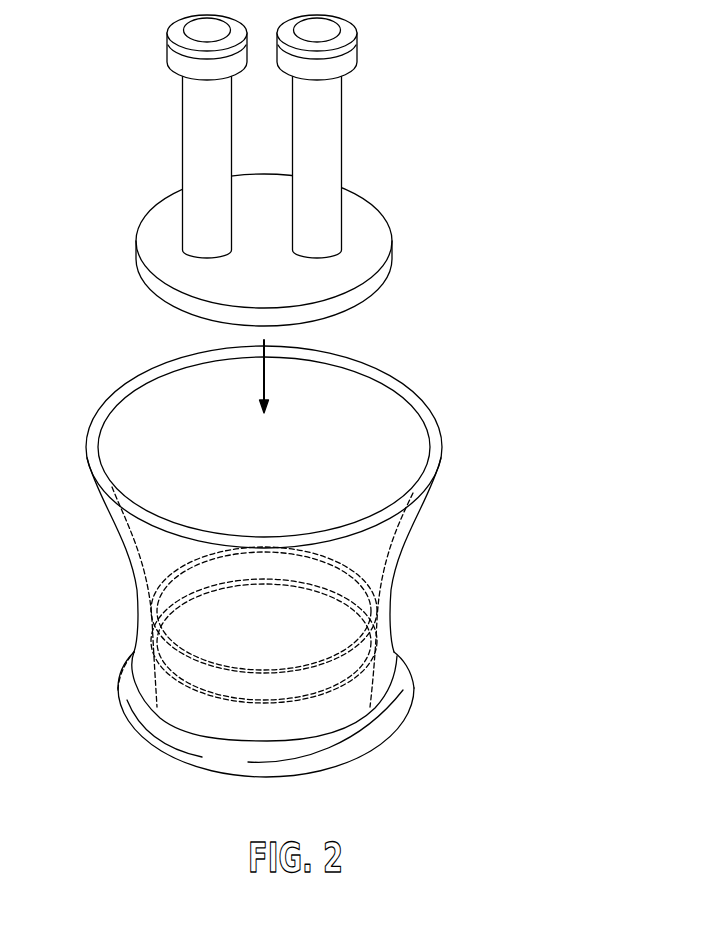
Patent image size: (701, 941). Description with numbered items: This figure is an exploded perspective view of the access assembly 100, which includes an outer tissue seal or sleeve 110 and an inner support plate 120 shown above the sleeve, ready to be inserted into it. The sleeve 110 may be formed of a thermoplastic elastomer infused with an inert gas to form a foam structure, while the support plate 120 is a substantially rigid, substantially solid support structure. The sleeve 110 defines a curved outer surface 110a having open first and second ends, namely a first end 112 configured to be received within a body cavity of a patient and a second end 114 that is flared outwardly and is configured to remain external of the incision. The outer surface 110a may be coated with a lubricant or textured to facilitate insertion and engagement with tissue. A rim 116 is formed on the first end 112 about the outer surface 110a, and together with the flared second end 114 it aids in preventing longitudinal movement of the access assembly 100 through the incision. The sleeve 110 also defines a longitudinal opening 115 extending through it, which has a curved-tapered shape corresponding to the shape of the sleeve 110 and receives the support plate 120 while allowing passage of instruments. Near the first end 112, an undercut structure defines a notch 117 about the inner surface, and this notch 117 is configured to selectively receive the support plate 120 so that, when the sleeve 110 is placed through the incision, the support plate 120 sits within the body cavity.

The access assembly 100 is at (403, 72).
The support plate 120 is at (360, 218).
The outer sleeve 110 is at (130, 578).
The longitudinal opening 115 is at (143, 423).
The second end 114 is at (413, 523).
The outer surface 110a is at (393, 618).
The first end 112 is at (402, 657).
The rim 116 is at (405, 680).
The notch 117 is at (132, 655).